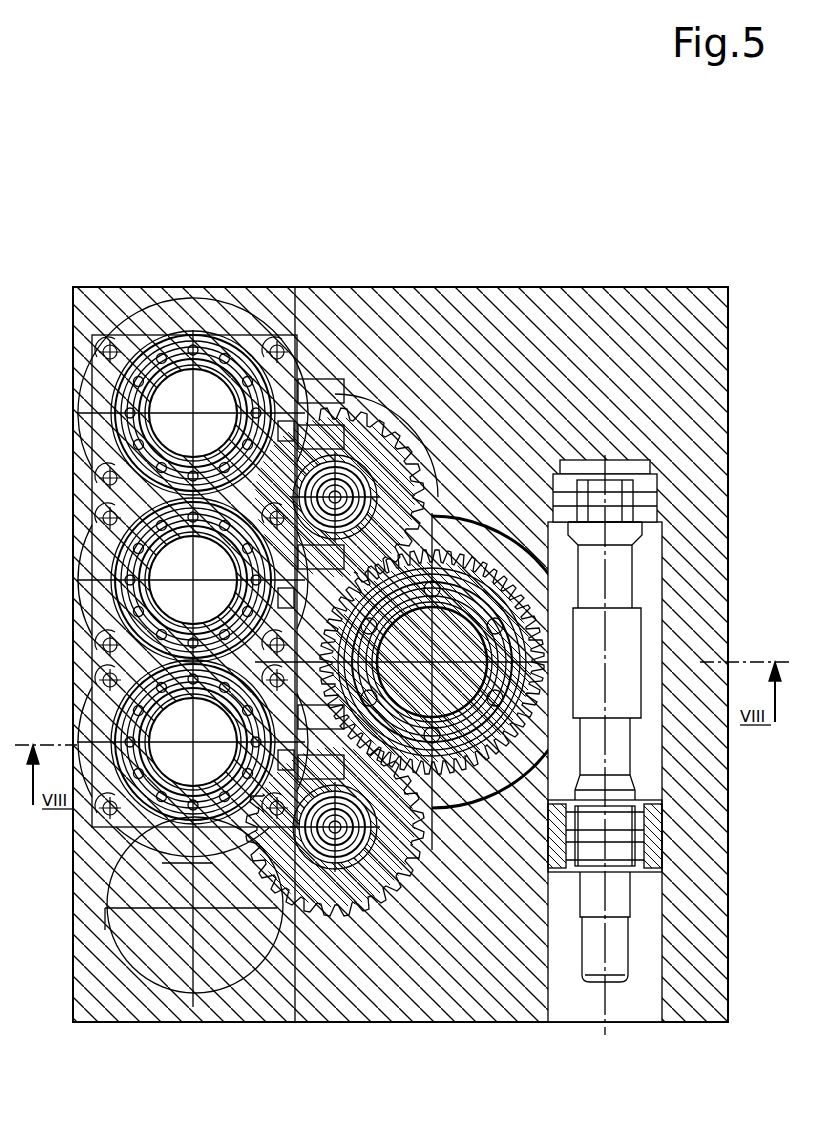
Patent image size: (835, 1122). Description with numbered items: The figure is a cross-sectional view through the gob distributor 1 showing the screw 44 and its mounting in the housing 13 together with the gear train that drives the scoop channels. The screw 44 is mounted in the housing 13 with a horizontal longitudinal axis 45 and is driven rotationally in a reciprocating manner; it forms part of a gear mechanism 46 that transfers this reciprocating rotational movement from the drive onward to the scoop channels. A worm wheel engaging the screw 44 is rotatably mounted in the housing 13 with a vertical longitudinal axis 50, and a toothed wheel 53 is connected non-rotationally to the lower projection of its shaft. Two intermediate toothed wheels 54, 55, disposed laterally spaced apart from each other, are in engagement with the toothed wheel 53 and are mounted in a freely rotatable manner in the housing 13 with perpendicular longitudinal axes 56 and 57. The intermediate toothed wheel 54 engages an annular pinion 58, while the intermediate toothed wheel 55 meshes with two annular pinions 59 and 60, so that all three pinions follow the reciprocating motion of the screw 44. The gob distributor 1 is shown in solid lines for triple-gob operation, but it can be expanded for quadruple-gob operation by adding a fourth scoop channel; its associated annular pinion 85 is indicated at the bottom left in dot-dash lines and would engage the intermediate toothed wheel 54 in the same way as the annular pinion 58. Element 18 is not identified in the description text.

The gob distributor 1 is at (337, 158).
The housing 13 is at (556, 276).
The piston / plunger 18 is at (226, 425).
The screw 44 is at (605, 745).
The horizontal longitudinal axis 45 is at (598, 1018).
The gear mechanism 46 is at (350, 925).
The vertical longitudinal axis 50 is at (423, 681).
The toothed wheel 53 is at (520, 615).
The intermediate toothed wheel 54 is at (378, 915).
The intermediate toothed wheel 55 is at (437, 400).
The perpendicular longitudinal axis 56 is at (417, 895).
The perpendicular longitudinal axis 57 is at (425, 455).
The annular pinion 58 is at (148, 727).
The annular pinion 59 is at (148, 565).
The annular pinion 60 is at (148, 398).
The annular pinion 85 is at (218, 990).